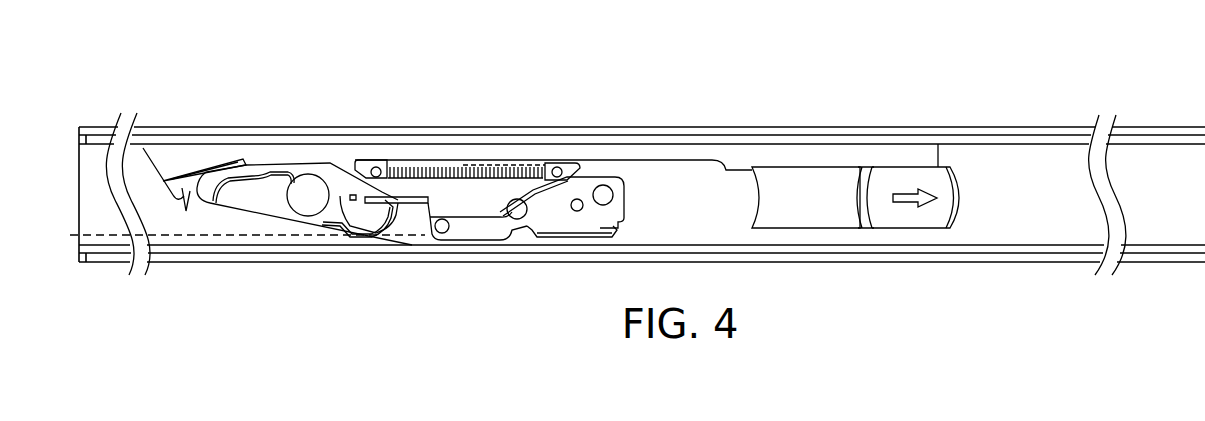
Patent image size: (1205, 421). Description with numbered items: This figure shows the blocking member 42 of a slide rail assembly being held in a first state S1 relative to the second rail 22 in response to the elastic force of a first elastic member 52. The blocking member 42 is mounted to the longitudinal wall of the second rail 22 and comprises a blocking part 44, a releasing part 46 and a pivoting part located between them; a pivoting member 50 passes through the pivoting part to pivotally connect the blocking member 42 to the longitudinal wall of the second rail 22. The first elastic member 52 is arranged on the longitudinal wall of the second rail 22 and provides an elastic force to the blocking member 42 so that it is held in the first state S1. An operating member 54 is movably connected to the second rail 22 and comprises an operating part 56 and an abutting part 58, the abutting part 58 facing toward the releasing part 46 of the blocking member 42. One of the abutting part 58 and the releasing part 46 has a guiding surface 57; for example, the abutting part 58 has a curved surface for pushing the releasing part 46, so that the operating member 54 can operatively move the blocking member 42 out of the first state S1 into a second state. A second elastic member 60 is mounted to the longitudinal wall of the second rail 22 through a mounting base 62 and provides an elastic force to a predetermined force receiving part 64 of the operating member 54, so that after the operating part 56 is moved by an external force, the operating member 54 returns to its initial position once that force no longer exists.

The second rail 22 is at (1018, 128).
The blocking member 42 is at (277, 231).
The blocking part 44 is at (410, 237).
The releasing part 46 is at (198, 185).
The pivoting member 50 is at (309, 192).
The first elastic member 52 is at (400, 197).
The operating member 54 is at (798, 237).
The operating part 56 is at (895, 218).
The guiding surface 57 is at (182, 189).
The abutting part 58 is at (179, 204).
The second elastic member 60 is at (500, 170).
The mounting base 62 is at (570, 170).
The force receiving part 64 is at (372, 169).
The first state S1 is at (235, 234).